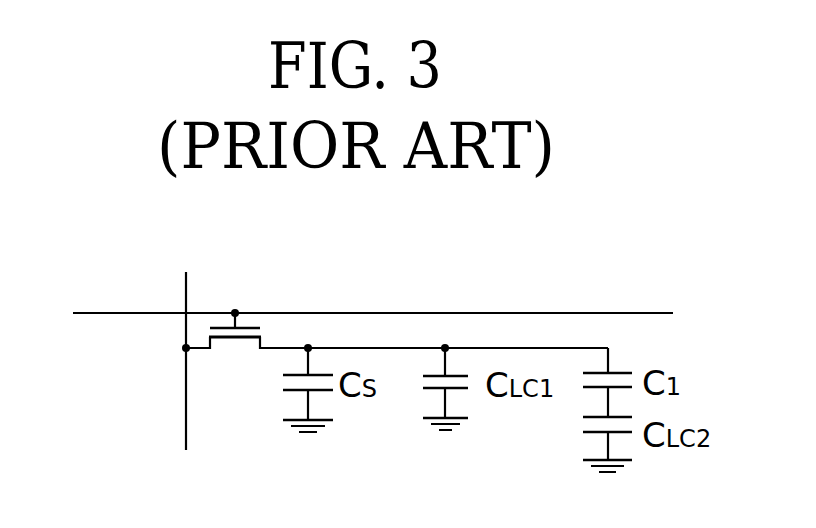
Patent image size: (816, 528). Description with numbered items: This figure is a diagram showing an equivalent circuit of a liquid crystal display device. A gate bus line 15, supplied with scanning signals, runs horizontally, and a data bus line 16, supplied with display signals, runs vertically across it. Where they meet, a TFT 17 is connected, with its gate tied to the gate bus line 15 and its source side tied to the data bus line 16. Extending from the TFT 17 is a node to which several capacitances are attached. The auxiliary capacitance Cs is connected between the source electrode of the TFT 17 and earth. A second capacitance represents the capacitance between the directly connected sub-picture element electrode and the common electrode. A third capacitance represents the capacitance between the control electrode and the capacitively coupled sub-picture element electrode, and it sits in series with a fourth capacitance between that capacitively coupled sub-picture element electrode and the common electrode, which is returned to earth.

The gate bus line 15 is at (138, 313).
The data bus line 16 is at (187, 287).
The TFT 17 is at (237, 352).